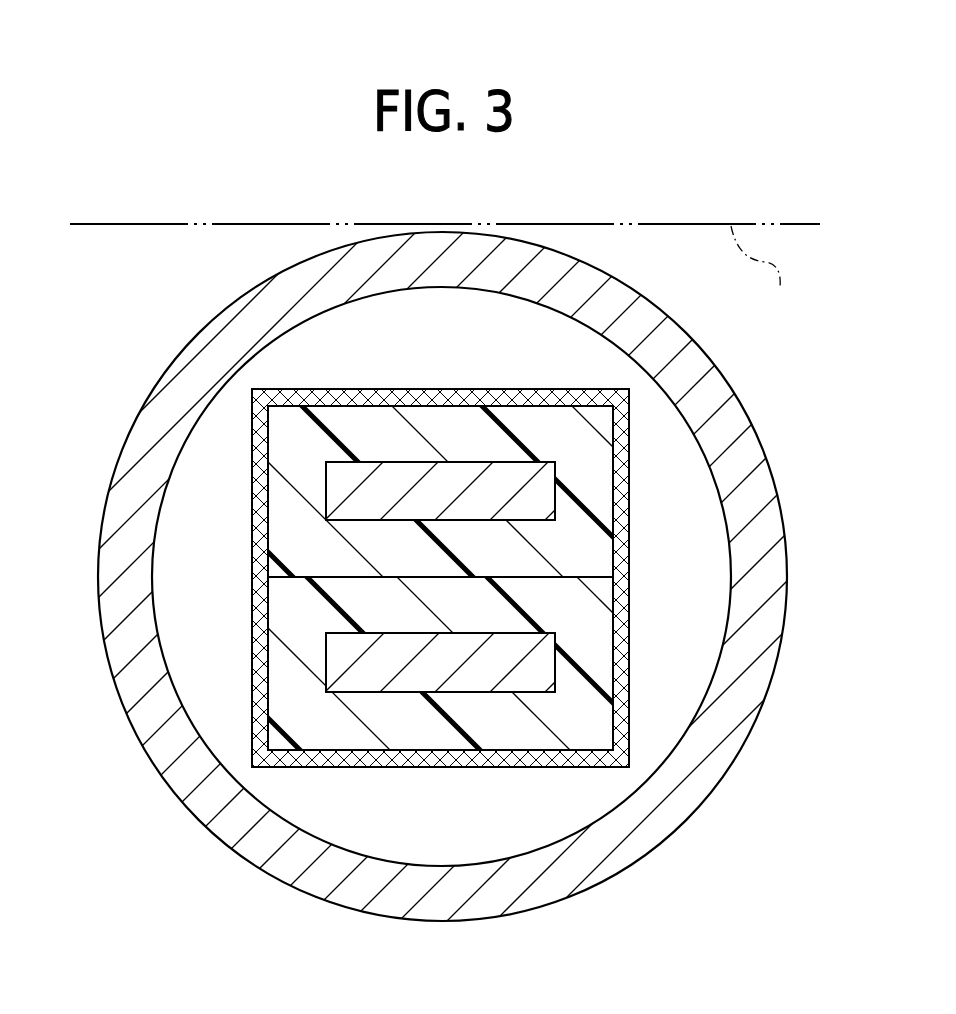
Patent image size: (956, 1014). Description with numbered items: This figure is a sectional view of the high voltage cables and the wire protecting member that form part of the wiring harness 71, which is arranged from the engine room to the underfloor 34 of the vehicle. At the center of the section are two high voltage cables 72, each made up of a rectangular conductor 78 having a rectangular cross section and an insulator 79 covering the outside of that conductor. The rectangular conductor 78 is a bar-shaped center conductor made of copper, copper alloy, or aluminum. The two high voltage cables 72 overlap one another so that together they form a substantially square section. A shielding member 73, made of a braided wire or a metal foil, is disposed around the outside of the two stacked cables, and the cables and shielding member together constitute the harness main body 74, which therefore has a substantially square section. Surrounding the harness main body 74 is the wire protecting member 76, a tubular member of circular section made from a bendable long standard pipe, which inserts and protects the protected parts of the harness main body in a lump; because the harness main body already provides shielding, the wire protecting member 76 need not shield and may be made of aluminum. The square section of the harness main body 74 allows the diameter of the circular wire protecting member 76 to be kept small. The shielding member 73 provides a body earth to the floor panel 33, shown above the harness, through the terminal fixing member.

The floor panel 33 is at (714, 225).
The underfloor 34 is at (765, 272).
The wiring harness 71 is at (478, 580).
The high voltage cable 72 is at (590, 472).
The shielding member 73 is at (623, 697).
The harness main body 74 is at (630, 553).
The wire protecting member 76 is at (213, 353).
The rectangular conductor 78 is at (347, 490).
The insulator 79 is at (297, 532).